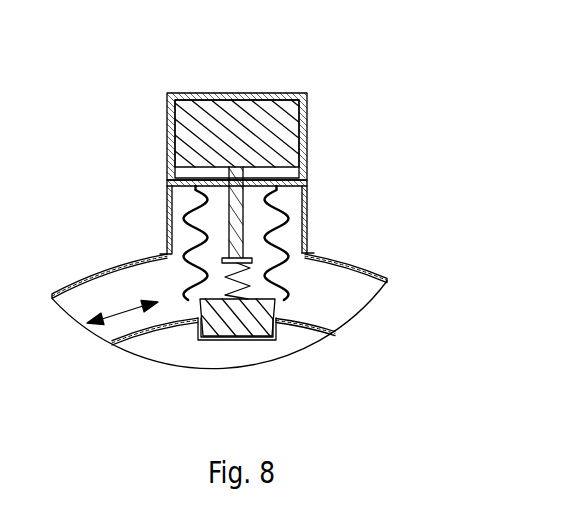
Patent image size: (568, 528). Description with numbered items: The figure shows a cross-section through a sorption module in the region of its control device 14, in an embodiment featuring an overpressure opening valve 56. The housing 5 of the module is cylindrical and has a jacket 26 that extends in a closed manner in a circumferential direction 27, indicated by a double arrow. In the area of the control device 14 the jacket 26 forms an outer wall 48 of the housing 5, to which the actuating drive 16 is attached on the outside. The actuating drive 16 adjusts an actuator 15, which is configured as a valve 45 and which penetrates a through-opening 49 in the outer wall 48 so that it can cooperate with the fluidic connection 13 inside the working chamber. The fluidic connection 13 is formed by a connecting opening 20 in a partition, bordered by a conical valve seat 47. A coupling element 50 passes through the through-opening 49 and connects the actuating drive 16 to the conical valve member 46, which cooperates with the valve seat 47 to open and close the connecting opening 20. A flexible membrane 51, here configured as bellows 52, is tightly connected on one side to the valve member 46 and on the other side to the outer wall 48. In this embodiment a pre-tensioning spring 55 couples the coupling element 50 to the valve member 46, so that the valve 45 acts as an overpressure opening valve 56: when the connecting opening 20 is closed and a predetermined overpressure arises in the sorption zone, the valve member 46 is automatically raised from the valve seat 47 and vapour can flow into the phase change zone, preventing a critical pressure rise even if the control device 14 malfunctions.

The housing 5 is at (202, 288).
The jacket 26 is at (58, 282).
The outer wall 48 is at (113, 284).
The control device 14 is at (340, 120).
The actuating drive 16 is at (244, 112).
The actuator 15 is at (161, 205).
The valve 45 is at (161, 205).
The overpressure opening valve 56 is at (166, 195).
The coupling element 50 is at (232, 237).
The membrane 51 is at (293, 243).
The bellows 52 is at (302, 212).
The through-opening 49 is at (296, 258).
The pre-tensioning spring 55 is at (248, 291).
The valve member 46 is at (235, 323).
The valve seat 47 is at (215, 338).
The fluidic connection 13 is at (223, 371).
The connecting opening 20 is at (257, 338).
The circumferential direction 27 is at (123, 310).